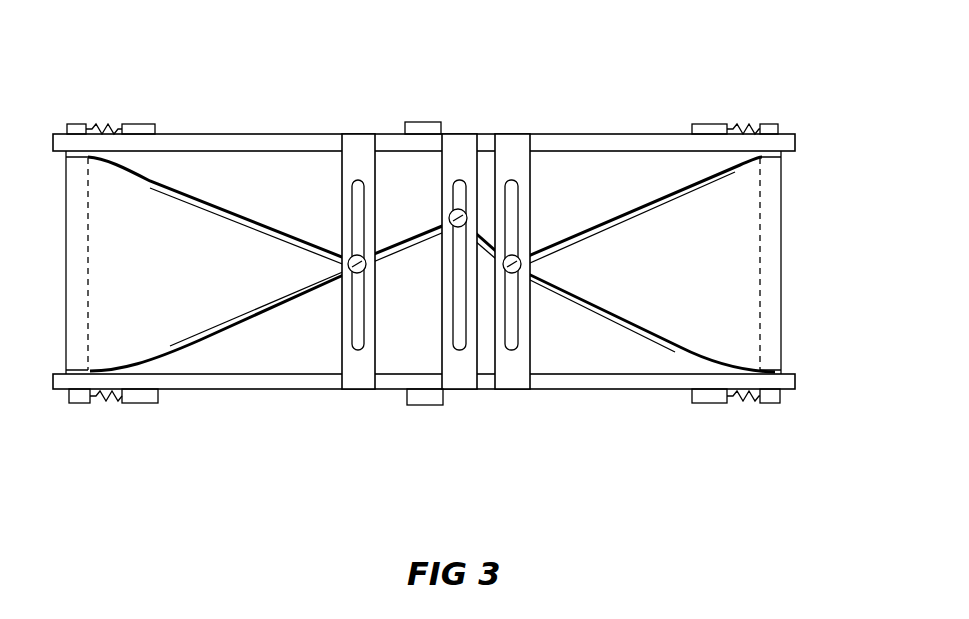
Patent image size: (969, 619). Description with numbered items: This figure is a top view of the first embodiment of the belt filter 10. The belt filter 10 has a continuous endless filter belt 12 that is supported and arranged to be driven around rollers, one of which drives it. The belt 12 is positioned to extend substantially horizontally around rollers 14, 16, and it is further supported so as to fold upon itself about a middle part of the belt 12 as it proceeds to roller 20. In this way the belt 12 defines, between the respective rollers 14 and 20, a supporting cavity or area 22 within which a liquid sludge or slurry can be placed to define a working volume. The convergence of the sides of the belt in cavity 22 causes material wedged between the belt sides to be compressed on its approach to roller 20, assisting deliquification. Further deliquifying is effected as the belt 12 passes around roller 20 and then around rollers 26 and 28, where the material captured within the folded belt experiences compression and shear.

The belt filter 10 is at (710, 96).
The continuous endless filter belt 12 is at (778, 297).
The roller 14 is at (80, 125).
The roller 16 is at (776, 152).
The roller 20 is at (350, 257).
The supporting cavity 22 is at (248, 283).
The roller 26 is at (458, 208).
The roller 28 is at (521, 258).